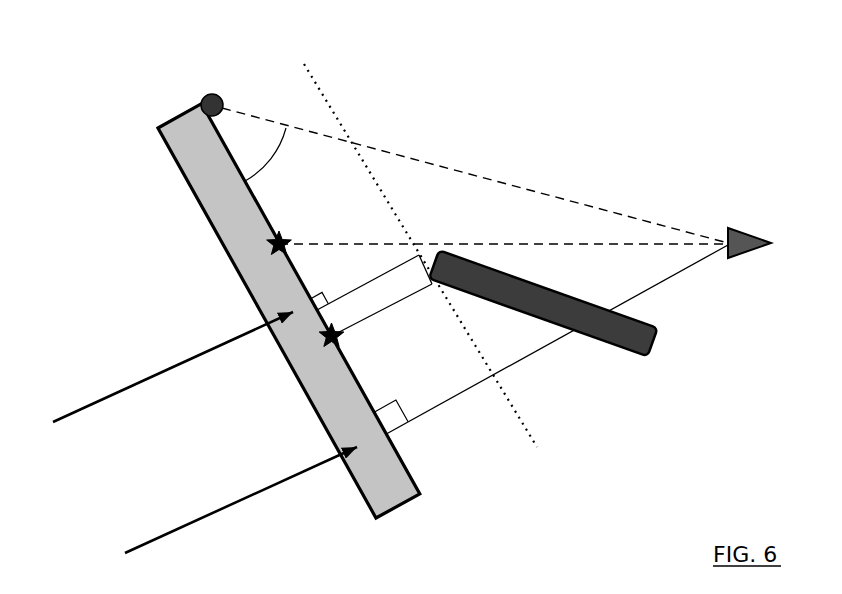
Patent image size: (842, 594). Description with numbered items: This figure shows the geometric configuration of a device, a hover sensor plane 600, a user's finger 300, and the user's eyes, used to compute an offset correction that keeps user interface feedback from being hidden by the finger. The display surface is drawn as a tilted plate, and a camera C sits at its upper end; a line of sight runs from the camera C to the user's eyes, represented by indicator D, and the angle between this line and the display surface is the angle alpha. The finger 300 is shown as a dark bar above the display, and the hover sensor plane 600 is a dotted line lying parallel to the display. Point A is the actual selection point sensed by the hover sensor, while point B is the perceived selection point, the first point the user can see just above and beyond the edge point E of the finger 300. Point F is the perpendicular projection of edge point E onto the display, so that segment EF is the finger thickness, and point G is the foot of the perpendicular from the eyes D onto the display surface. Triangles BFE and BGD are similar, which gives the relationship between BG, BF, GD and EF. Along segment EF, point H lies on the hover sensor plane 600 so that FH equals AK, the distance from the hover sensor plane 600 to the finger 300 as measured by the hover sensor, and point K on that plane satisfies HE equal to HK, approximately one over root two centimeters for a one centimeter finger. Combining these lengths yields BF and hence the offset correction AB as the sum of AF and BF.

The hover sensor plane 600 is at (420, 243).
The finger 300 is at (589, 323).
The camera C is at (200, 93).
The user's eyes D is at (773, 228).
The perceived selection point B is at (268, 251).
The actual selection point A is at (320, 348).
The perpendicular projection point of edge point E F is at (161, 380).
The foot of perpendicular from eyes D G is at (224, 505).
The point on hover sensor plane H is at (447, 178).
The edge point of the finger E is at (545, 157).
The point on hover sensor plane K is at (486, 363).